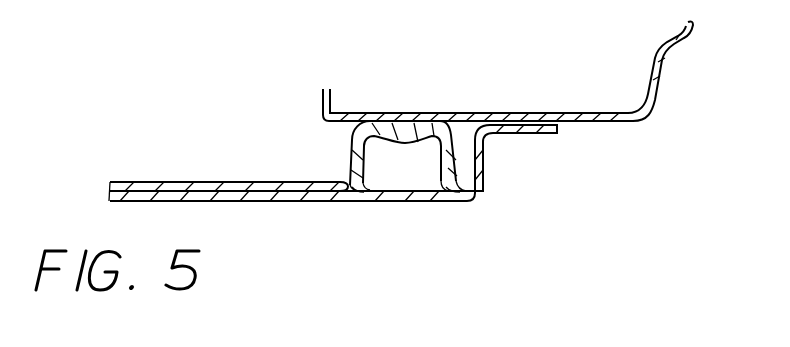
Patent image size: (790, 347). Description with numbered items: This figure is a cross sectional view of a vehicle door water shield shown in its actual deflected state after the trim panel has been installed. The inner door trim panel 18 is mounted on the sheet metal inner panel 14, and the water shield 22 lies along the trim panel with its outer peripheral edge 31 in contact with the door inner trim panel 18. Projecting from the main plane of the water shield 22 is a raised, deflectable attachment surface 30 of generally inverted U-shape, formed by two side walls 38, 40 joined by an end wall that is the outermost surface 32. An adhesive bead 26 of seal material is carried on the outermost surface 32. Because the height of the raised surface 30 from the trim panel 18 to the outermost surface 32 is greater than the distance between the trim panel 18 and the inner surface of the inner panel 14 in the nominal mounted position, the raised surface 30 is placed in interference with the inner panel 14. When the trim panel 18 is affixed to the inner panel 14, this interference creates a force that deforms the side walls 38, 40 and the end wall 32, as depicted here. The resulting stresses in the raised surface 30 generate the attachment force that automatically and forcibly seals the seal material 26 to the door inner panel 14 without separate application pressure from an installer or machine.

The inner panel 14 is at (622, 122).
The inner door trim panel 18 is at (390, 205).
The water shield 22 is at (183, 181).
The adhesive bead 26 is at (399, 124).
The raised deflectable attachment surface 30 is at (351, 140).
The outer peripheral edge 31 is at (463, 166).
The outermost surface 32 is at (455, 124).
The side wall 38 is at (364, 200).
The side wall 40 is at (436, 202).